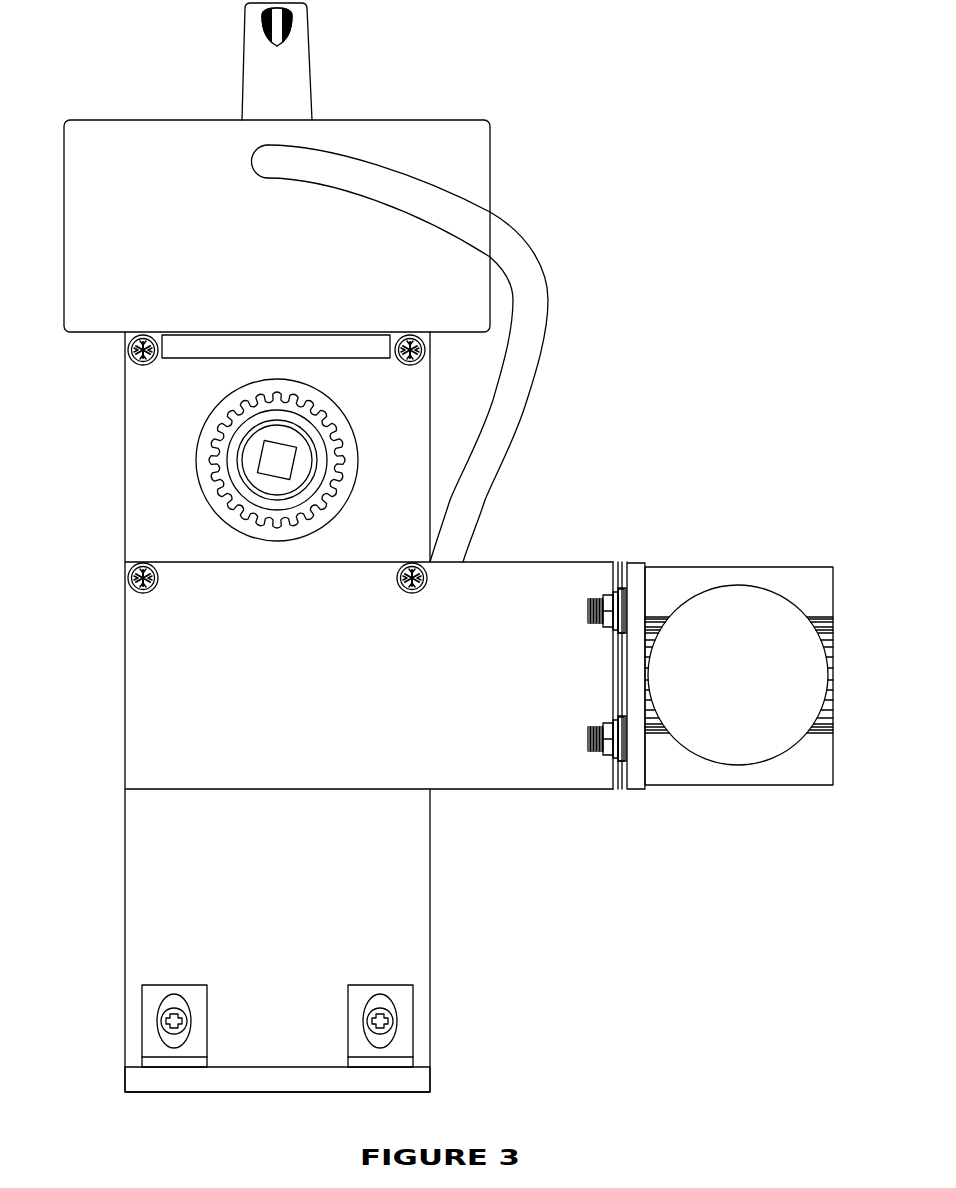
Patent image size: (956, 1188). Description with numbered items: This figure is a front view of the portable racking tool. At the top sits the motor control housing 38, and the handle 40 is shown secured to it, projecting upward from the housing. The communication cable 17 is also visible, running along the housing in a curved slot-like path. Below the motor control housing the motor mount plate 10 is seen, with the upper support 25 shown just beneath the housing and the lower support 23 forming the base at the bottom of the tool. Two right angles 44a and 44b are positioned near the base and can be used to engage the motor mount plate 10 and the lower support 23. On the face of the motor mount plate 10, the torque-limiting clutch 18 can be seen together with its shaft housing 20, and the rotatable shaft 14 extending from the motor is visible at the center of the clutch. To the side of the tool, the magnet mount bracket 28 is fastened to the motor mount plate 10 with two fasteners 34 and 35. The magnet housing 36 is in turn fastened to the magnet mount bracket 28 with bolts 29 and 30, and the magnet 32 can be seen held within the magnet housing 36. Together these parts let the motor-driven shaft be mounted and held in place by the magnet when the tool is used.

The motor mount plate 10 is at (403, 880).
The rotatable shaft 14 is at (277, 458).
The communication cable 17 is at (530, 290).
The torque-limiting clutch 18 is at (234, 403).
The shaft housing 20 is at (238, 493).
The lower support 23 is at (267, 1078).
The upper support 25 is at (238, 343).
The magnet mount bracket 28 is at (538, 582).
The bolt 29 is at (605, 627).
The bolt 30 is at (606, 733).
The magnet 32 is at (716, 628).
The fastener 34 is at (138, 594).
The fastener 35 is at (420, 594).
The magnet housing 36 is at (799, 770).
The motor control housing 38 is at (123, 145).
The handle 40 is at (303, 57).
The right angle 44a is at (152, 1000).
The right angle 44b is at (403, 1000).